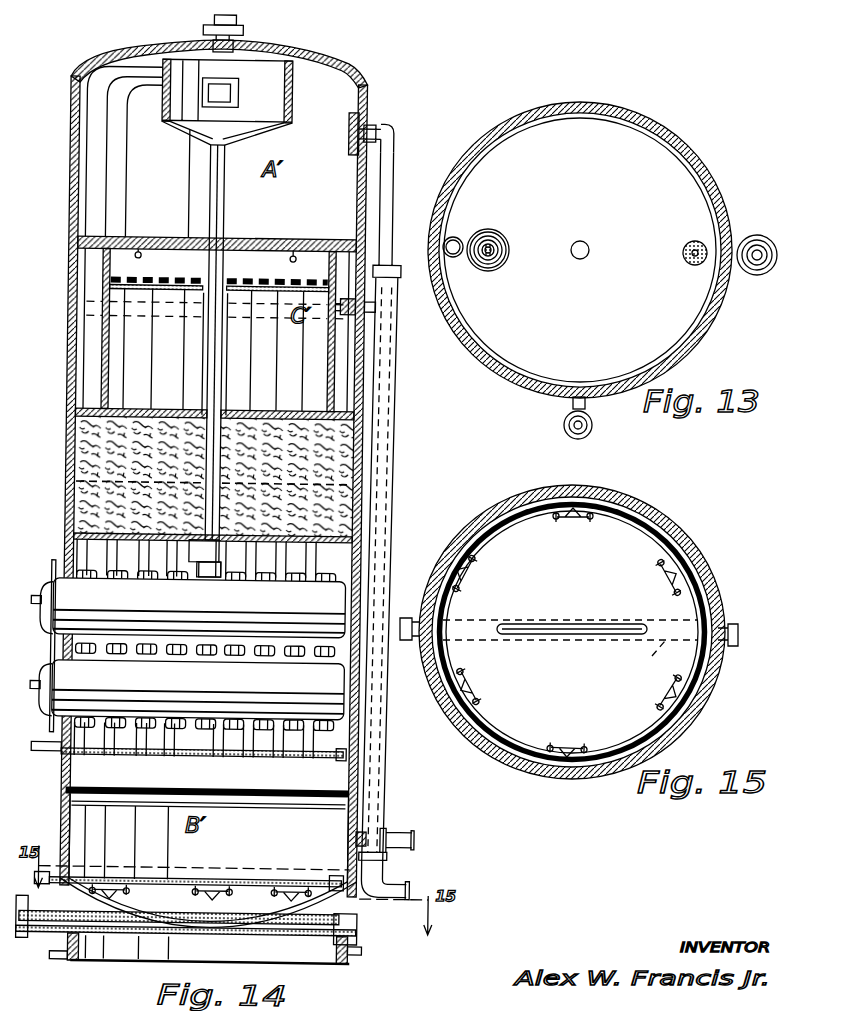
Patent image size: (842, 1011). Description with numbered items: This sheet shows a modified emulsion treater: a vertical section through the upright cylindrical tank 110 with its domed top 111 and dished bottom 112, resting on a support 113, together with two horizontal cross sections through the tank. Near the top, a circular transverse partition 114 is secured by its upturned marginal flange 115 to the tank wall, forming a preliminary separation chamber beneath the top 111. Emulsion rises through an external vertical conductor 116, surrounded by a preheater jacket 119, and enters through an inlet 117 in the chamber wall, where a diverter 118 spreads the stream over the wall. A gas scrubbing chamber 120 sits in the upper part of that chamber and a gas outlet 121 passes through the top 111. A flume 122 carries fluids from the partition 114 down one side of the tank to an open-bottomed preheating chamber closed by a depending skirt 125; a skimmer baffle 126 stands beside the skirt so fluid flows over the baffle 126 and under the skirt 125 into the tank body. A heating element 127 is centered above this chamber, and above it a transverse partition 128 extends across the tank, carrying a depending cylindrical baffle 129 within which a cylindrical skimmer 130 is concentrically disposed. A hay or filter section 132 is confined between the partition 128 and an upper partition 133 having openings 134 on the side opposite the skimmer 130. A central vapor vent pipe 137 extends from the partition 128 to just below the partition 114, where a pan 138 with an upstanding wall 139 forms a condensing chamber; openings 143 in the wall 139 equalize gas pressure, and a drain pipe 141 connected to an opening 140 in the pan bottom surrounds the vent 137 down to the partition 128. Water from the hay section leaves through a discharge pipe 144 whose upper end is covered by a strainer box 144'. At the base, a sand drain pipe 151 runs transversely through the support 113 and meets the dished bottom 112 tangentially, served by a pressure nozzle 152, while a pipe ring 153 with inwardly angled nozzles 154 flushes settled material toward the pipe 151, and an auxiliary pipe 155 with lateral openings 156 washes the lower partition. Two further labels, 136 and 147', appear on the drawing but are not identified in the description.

In FIG. 14, the upright cylindrical tank 110 is at (340, 367).
In FIG. 13, the upright cylindrical tank 110 is at (712, 130).
In FIG. 15, the upright cylindrical tank 110 is at (497, 503).
In FIG. 14, the domed top 111 is at (353, 45).
In FIG. 14, the dished bottom 112 is at (352, 911).
In FIG. 14, the support 113 is at (133, 958).
In FIG. 14, the circular transverse partition 114 is at (316, 222).
In FIG. 14, the marginal upturned flange 115 is at (78, 232).
In FIG. 14, the conductor 116 is at (378, 887).
In FIG. 13, the conductor 116 is at (563, 422).
In FIG. 14, the inlet 117 is at (368, 118).
In FIG. 14, the diverter 118 is at (344, 134).
In FIG. 14, the preheater jacket 119 is at (382, 401).
In FIG. 13, the preheater jacket 119 is at (592, 430).
In FIG. 14, the gas scrubbing chamber 120 is at (258, 75).
In FIG. 14, the gas outlet 121 is at (197, 24).
In FIG. 14, the flume 122 is at (218, 567).
In FIG. 13, the flume 122 is at (455, 237).
In FIG. 14, the depending skirt 125 is at (322, 797).
In FIG. 14, the skimmer baffle 126 is at (268, 808).
In FIG. 14, the heating element 127 is at (330, 688).
In FIG. 15, the heating element 127 is at (569, 632).
In FIG. 14, the transverse horizontal partition 128 is at (338, 576).
In FIG. 13, the transverse horizontal partition 128 is at (525, 348).
In FIG. 14, the cylindrical baffle 129 is at (230, 546).
In FIG. 13, the cylindrical baffle 129 is at (503, 237).
In FIG. 13, the cylindrical skimmer 130 is at (490, 232).
In FIG. 14, the hay or filter section 132 is at (350, 453).
In FIG. 13, the hay or filter section 132 is at (590, 230).
In FIG. 14, the upper partition 133 is at (266, 394).
In FIG. 14, the openings 134 is at (320, 413).
In FIG. 14, the wall fitting 136 is at (347, 315).
In FIG. 14, the vapor vent pipe 137 is at (221, 346).
In FIG. 14, the pan 138 is at (262, 305).
In FIG. 14, the marginal wall 139 is at (333, 242).
In FIG. 14, the opening 140 is at (219, 273).
In FIG. 14, the drain pipe 141 is at (225, 378).
In FIG. 14, the openings 143 is at (145, 255).
In FIG. 13, the discharge pipe 144 is at (685, 269).
In FIG. 13, the strainer box 144' is at (594, 255).
In FIG. 13, the side fitting 147' is at (759, 278).
In FIG. 14, the sand drain pipe 151 is at (245, 936).
In FIG. 15, the sand drain pipe 151 is at (570, 646).
In FIG. 14, the pressure nozzle 152 is at (67, 962).
In FIG. 14, the pipe ring 153 is at (213, 852).
In FIG. 15, the pipe ring 153 is at (413, 618).
In FIG. 14, the nozzles 154 is at (290, 852).
In FIG. 15, the nozzles 154 is at (680, 597).
In FIG. 14, the auxiliary pipe 155 is at (163, 755).
In FIG. 14, the openings 156 is at (285, 760).